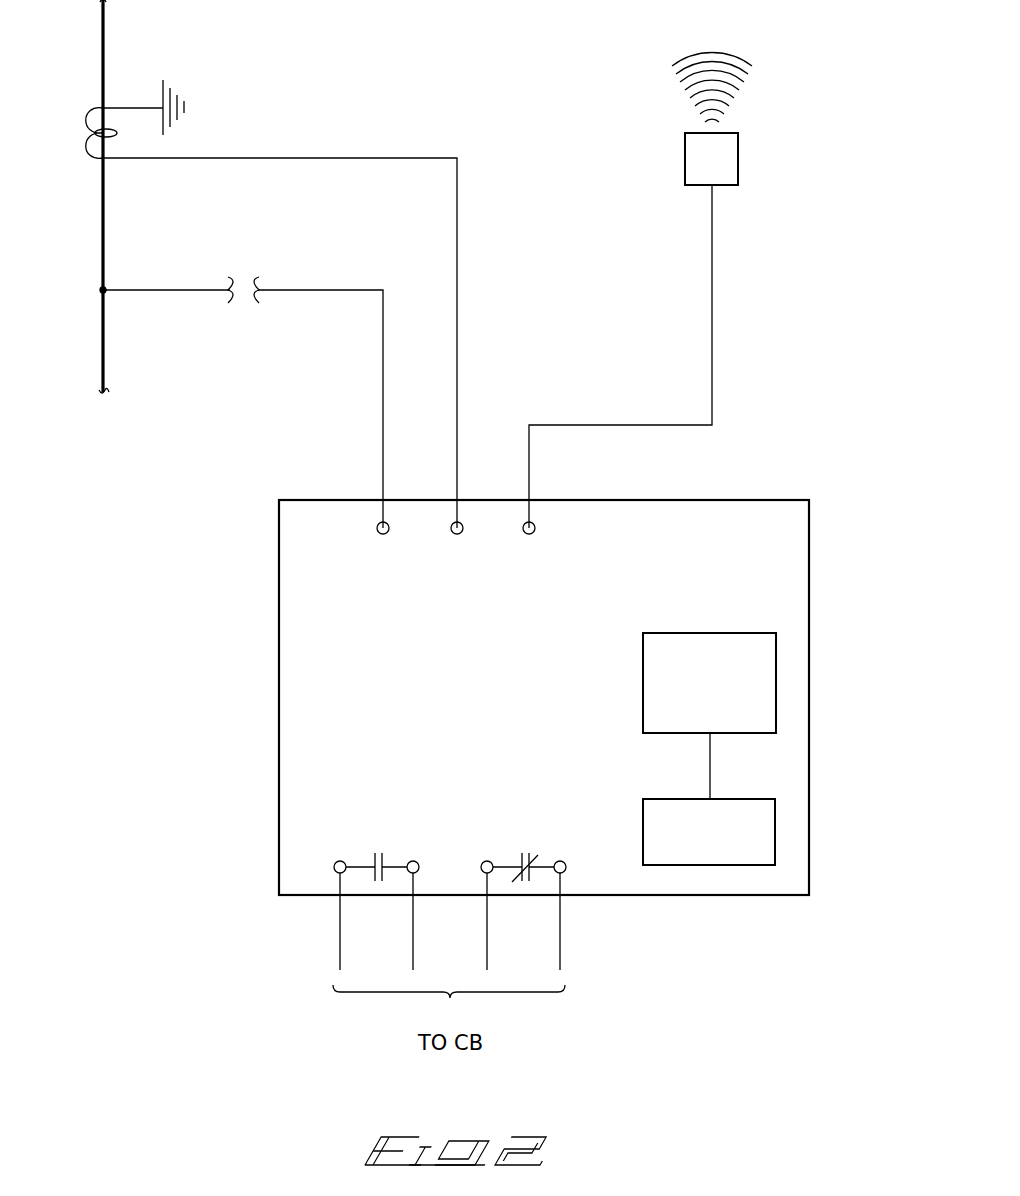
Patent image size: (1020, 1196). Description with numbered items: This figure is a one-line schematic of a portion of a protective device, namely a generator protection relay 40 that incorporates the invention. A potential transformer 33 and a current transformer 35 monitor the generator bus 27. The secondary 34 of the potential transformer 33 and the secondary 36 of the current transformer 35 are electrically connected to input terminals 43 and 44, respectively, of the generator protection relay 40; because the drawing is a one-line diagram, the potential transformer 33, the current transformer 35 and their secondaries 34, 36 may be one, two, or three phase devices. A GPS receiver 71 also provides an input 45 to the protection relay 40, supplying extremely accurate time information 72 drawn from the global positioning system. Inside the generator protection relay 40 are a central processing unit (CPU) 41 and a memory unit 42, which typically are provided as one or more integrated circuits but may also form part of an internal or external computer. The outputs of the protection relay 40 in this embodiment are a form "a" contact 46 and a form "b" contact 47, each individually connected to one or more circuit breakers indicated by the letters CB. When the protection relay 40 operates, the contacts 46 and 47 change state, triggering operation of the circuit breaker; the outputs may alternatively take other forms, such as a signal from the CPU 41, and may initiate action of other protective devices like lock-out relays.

The generator bus 27 is at (103, 333).
The potential transformer 33 is at (244, 268).
The secondary of the potential transformer 34 is at (326, 290).
The current transformer 35 is at (78, 160).
The secondary of the current transformer 36 is at (331, 158).
The generator protection relay 40 is at (824, 533).
The central processing unit 41 is at (643, 680).
The memory unit 42 is at (643, 827).
The input terminal 43 is at (377, 528).
The input terminal 44 is at (463, 530).
The input 45 is at (535, 527).
The form "a" contact 46 is at (376, 838).
The form "b" contact 47 is at (529, 838).
The GPS receiver 71 is at (685, 158).
The time information 72 is at (712, 338).